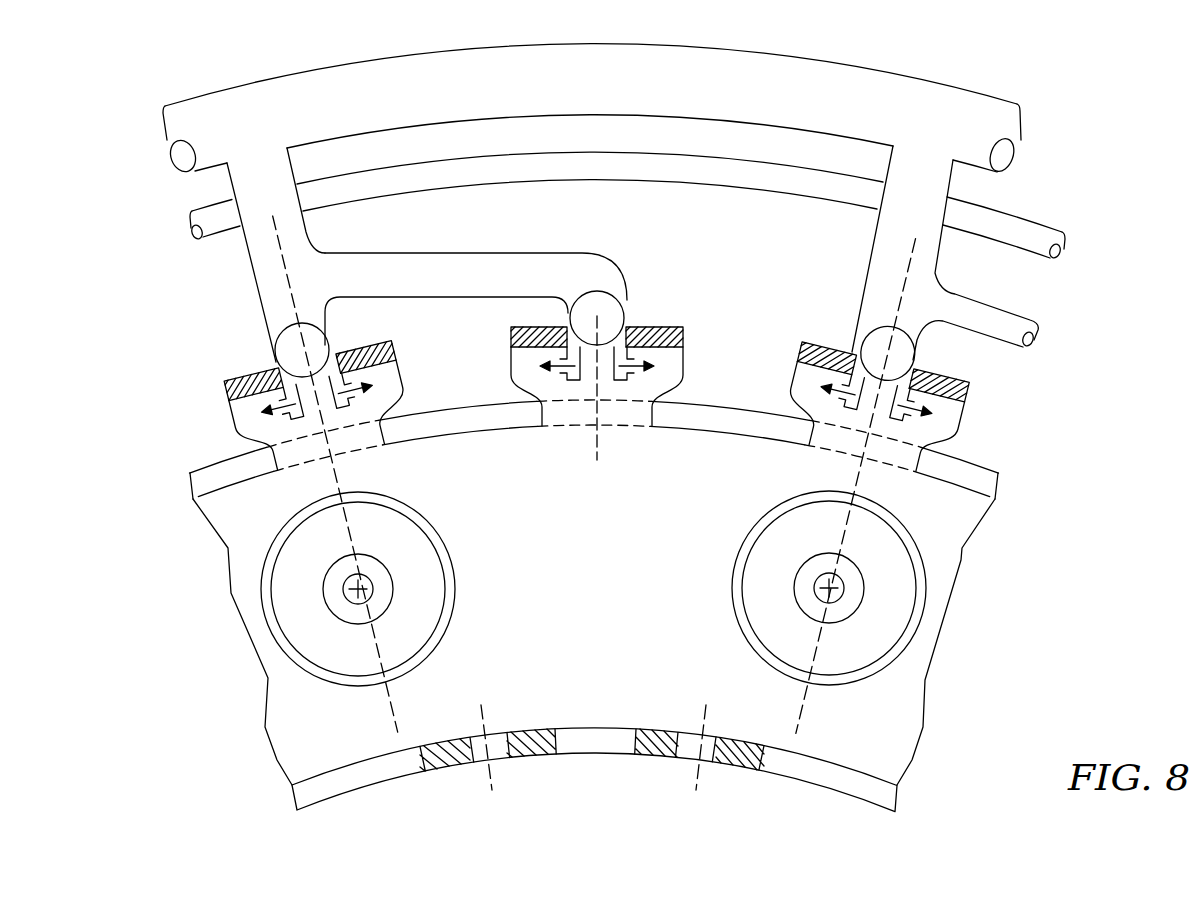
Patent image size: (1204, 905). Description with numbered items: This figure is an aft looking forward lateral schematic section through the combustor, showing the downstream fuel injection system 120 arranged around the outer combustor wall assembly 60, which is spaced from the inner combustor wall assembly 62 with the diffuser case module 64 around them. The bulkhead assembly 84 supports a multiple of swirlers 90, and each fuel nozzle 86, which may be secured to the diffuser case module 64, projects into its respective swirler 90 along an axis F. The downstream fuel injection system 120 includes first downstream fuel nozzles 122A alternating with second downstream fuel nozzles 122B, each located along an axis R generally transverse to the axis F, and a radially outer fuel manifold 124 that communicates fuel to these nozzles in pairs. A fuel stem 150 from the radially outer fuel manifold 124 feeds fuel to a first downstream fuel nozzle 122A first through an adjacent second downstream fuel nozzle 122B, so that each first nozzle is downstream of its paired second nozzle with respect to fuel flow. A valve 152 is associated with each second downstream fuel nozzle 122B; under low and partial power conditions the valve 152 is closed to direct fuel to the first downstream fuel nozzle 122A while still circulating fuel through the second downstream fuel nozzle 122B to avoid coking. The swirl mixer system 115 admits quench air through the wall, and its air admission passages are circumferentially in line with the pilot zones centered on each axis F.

The outer combustor wall assembly 60 is at (832, 785).
The inner combustor wall assembly 62 is at (973, 468).
The diffuser case module 64 is at (628, 170).
The bulkhead assembly 84 is at (938, 629).
The fuel nozzle 86 is at (373, 598).
The swirler 90 is at (446, 624).
The swirl mixer system 115 is at (702, 784).
The downstream fuel injection system 120 is at (1058, 178).
The first downstream fuel nozzle 122A is at (652, 289).
The second downstream fuel nozzle 122B is at (250, 320).
The radially outer fuel manifold 124 is at (348, 93).
The fuel stem 150 is at (310, 233).
The valve 152 is at (276, 340).
The axis R is at (330, 458).
The axis F is at (366, 578).